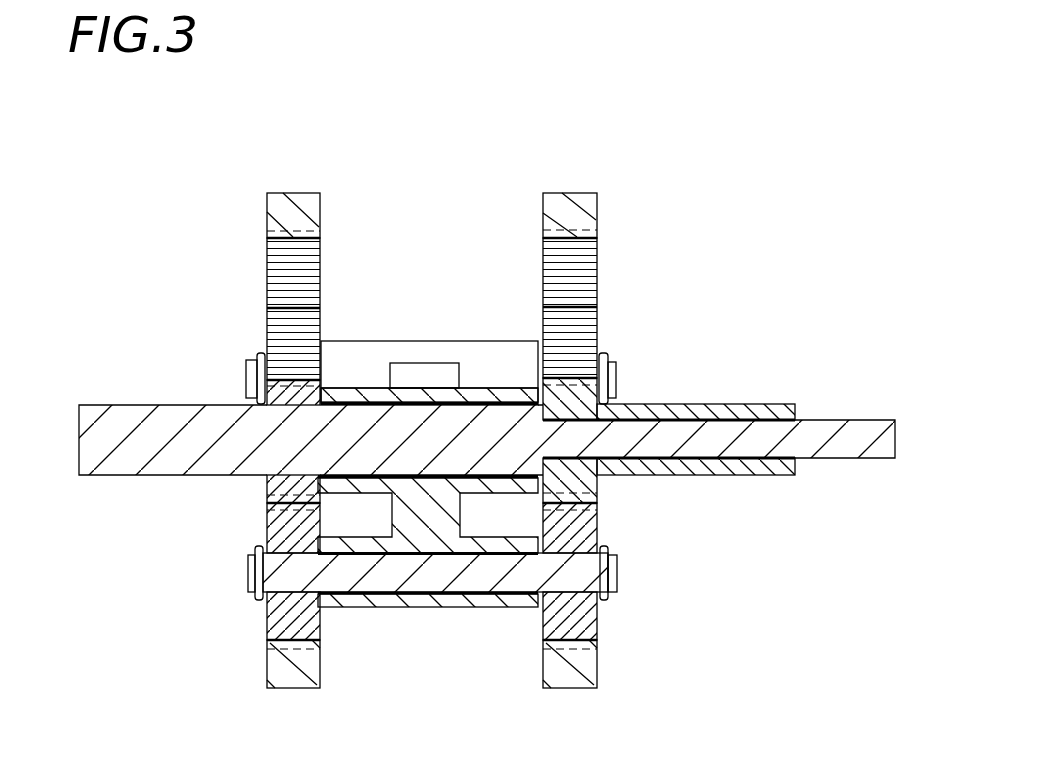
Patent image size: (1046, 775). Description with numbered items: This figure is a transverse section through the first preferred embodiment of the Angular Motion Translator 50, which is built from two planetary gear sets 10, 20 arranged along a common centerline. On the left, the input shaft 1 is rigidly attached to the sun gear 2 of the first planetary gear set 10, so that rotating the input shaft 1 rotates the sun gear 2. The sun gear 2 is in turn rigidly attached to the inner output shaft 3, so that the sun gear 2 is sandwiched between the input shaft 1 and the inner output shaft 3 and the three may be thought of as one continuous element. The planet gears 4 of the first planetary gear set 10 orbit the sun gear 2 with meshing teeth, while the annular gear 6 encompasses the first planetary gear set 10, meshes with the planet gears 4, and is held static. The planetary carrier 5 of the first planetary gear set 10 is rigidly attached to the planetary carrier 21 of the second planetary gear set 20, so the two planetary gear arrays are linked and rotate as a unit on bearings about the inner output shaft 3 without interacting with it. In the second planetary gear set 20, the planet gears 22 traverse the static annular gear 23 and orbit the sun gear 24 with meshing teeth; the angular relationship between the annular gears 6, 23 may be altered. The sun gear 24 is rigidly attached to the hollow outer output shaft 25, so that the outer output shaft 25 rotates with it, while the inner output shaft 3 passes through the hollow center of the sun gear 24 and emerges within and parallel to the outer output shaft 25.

The input shaft 1 is at (128, 413).
The sun gear 2 is at (285, 440).
The inner output shaft 3 is at (877, 442).
The planet gears 4 is at (277, 322).
The planetary carrier 5 is at (363, 360).
The annular gear 6 is at (283, 202).
The first planetary gear set 10 is at (308, 748).
The second planetary gear set 20 is at (588, 752).
The planetary carrier 21 is at (497, 372).
The planet gears 22 is at (580, 333).
The annular gear 23 is at (562, 200).
The sun gear 24 is at (597, 487).
The outer output shaft 25 is at (723, 408).
The Angular Motion Translator 50 is at (157, 165).